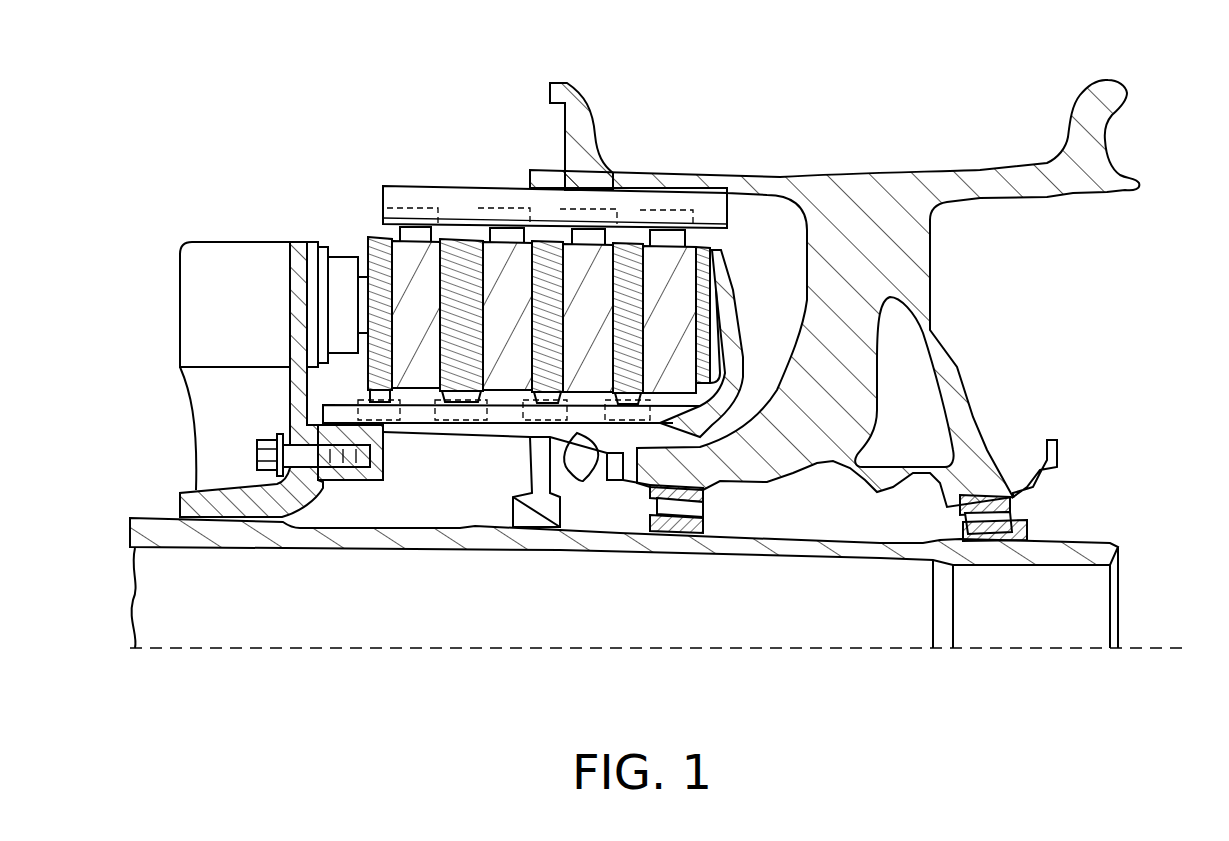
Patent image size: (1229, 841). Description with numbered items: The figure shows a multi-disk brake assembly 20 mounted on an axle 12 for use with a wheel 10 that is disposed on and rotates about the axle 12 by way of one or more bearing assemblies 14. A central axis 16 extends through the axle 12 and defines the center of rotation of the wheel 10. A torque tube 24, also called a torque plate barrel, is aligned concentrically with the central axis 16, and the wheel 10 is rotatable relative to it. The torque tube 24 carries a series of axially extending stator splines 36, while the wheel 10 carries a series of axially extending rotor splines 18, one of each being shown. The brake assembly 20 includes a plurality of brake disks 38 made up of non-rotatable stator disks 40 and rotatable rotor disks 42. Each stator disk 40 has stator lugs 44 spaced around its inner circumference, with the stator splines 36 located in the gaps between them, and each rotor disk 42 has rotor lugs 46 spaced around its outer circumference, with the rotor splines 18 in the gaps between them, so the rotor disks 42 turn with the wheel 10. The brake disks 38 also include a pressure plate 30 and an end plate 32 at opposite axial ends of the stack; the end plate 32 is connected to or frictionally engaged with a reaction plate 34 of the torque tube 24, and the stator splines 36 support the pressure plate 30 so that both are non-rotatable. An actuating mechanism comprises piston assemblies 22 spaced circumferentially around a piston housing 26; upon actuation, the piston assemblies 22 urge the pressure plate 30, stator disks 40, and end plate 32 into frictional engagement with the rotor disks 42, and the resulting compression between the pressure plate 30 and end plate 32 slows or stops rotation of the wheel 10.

The wheel 10 is at (860, 186).
The axle 12 is at (845, 545).
The bearing assembly 14 is at (700, 511).
The central axis 16 is at (1176, 648).
The rotor spline 18 is at (463, 195).
The multi-disk brake assembly 20 is at (272, 150).
The piston assembly 22 is at (190, 212).
The torque tube 24 is at (425, 432).
The piston housing 26 is at (248, 240).
The pressure plate 30 is at (373, 248).
The end plate 32 is at (722, 237).
The reaction plate 34 is at (738, 303).
The stator spline 36 is at (492, 437).
The brake disk 38 is at (378, 222).
The stator disk 40 is at (455, 395).
The rotor disk 42 is at (415, 250).
The stator lug 44 is at (581, 469).
The rotor lug 46 is at (632, 117).